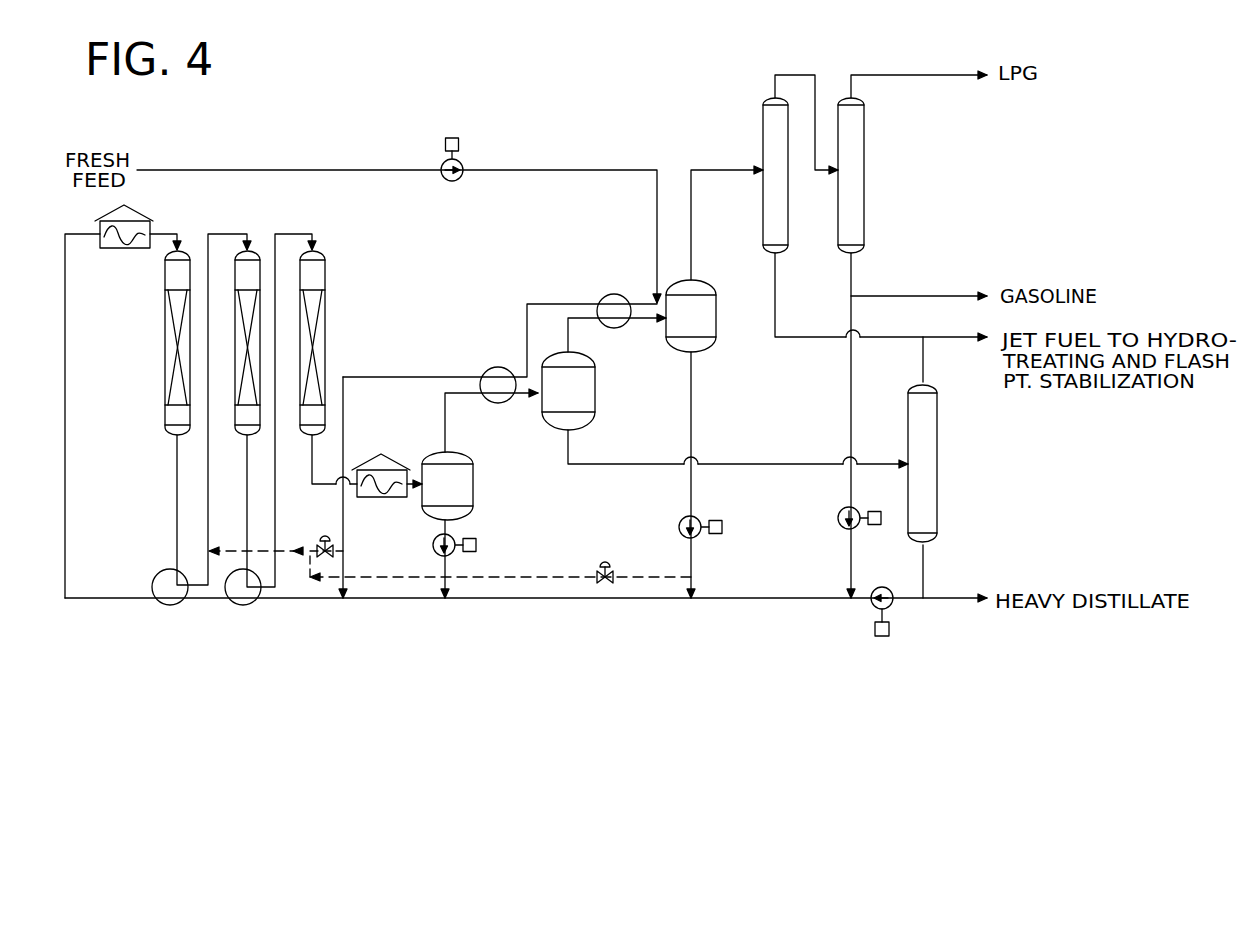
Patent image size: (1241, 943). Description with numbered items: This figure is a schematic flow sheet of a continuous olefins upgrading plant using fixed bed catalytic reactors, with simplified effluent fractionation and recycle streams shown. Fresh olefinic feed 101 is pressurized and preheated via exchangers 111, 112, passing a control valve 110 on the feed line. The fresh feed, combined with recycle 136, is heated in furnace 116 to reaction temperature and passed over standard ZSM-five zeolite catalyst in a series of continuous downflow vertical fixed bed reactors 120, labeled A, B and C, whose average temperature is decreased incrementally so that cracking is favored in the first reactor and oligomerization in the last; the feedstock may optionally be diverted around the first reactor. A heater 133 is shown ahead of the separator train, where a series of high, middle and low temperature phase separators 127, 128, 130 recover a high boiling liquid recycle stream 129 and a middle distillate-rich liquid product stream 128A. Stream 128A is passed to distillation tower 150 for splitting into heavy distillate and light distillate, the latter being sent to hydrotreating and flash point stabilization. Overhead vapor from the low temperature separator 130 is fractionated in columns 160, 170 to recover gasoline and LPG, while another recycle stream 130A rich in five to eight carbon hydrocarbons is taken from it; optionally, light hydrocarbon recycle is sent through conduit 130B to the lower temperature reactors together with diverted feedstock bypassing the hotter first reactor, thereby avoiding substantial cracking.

The fresh olefinic feed 101 is at (235, 170).
The flow control valve 110 is at (462, 161).
The exchanger 111 is at (609, 295).
The exchanger 112 is at (484, 366).
The furnace 116 is at (120, 248).
The fixed bed reactors 120 is at (305, 246).
The high temperature phase separator 127 is at (473, 479).
The middle temperature phase separator 128 is at (595, 388).
The middle distillate-rich liquid product stream 128A is at (738, 463).
The high boiling liquid recycle stream 129 is at (455, 531).
The low temperature phase separator 130 is at (716, 321).
The recycle stream 130A is at (693, 403).
The conduit 130B is at (532, 567).
The heater 133 is at (390, 498).
The recycle 136 is at (385, 598).
The distillation tower 150 is at (937, 490).
The fractionator 160 is at (763, 135).
The debutanizer column 170 is at (866, 146).